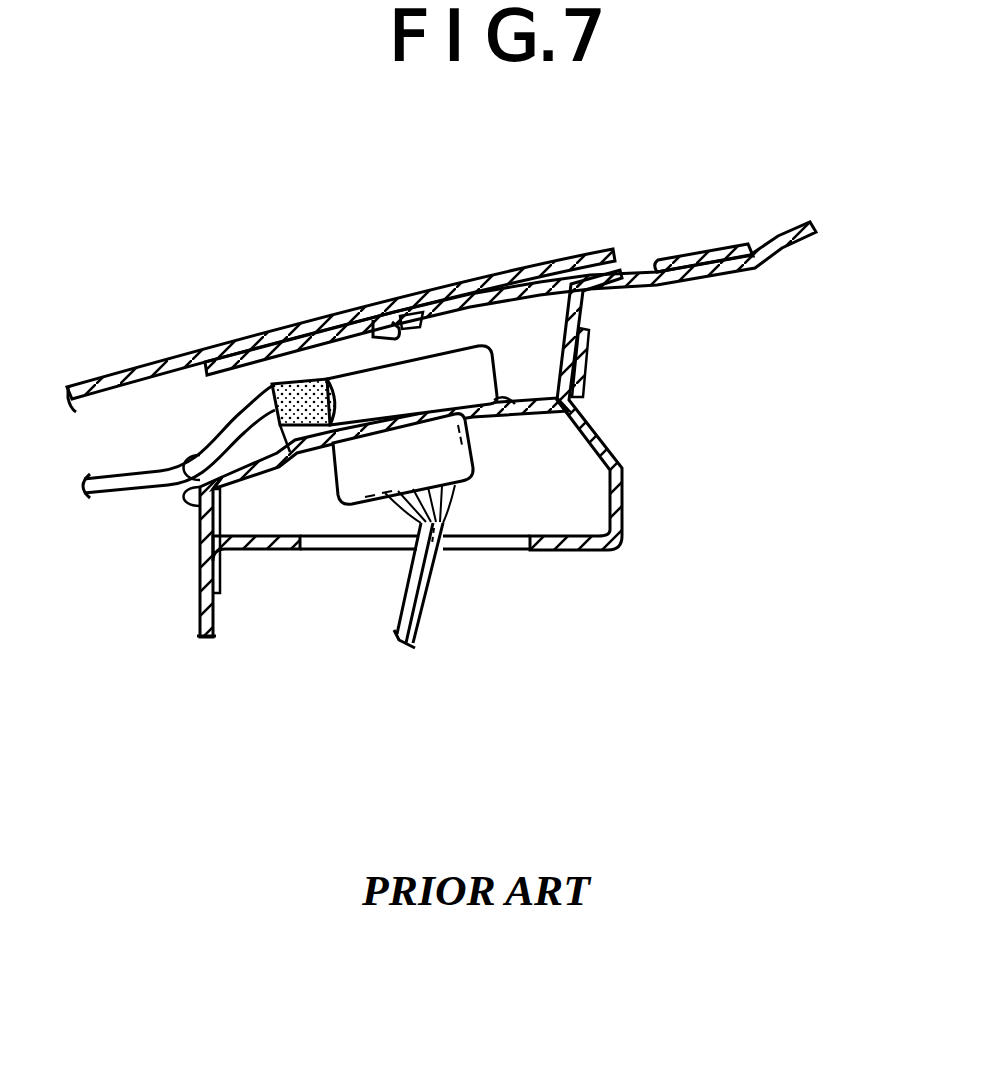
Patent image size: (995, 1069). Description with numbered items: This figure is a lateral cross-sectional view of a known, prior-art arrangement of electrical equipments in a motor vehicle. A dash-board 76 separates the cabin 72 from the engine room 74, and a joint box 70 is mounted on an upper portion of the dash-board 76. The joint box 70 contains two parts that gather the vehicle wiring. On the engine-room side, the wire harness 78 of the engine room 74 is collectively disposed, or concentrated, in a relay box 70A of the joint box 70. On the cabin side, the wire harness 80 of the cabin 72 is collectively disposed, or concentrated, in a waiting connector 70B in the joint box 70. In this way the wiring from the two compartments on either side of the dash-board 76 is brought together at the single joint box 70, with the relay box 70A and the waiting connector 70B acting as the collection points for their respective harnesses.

The joint box 70 is at (432, 405).
The relay box 70A is at (467, 363).
The waiting connector 70B is at (458, 468).
The cabin 72 is at (797, 377).
The engine room 74 is at (351, 492).
The dash-board 76 is at (197, 597).
The wire harness 78 is at (153, 490).
The wire harness 80 is at (425, 588).